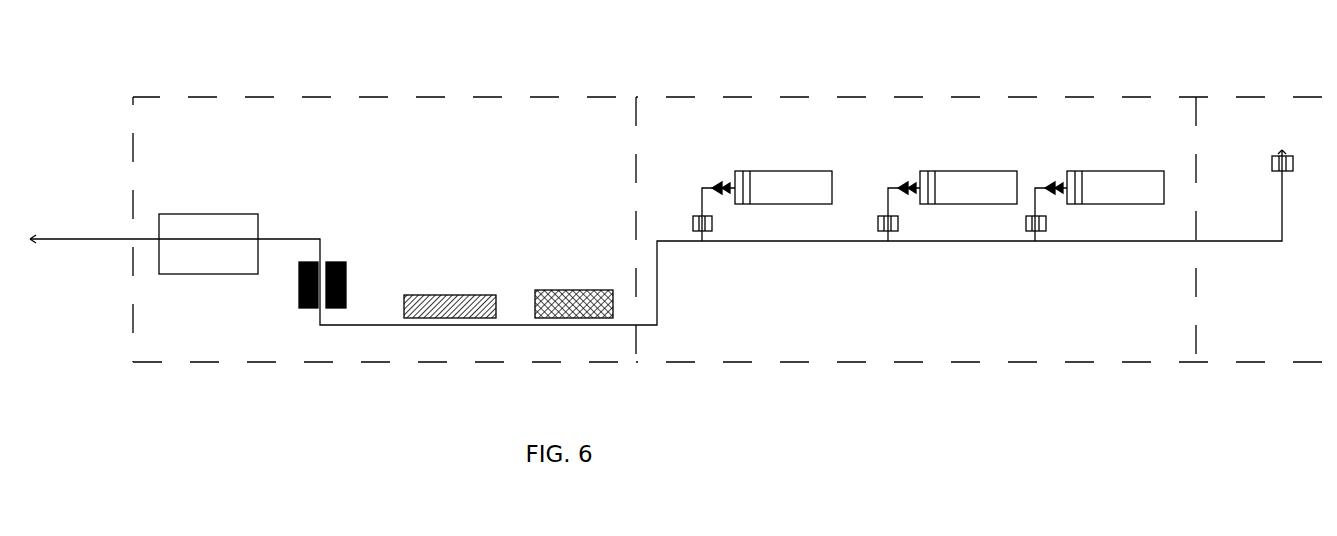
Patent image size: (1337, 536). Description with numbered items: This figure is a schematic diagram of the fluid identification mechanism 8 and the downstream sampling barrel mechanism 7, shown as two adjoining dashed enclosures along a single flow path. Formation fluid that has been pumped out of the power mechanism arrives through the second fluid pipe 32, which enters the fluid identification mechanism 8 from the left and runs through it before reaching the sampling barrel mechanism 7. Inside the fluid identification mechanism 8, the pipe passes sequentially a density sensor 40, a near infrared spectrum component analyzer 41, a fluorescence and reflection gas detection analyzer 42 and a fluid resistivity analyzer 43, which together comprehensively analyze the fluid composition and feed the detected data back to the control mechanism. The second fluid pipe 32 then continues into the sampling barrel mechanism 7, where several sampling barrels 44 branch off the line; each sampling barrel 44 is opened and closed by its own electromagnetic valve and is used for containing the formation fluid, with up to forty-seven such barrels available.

The sampling barrel mechanism 7 is at (900, 92).
The fluid identification mechanism 8 is at (476, 93).
The second fluid pipe 32 is at (77, 239).
The density sensor 40 is at (218, 221).
The near infrared spectrum component analyzer 41 is at (348, 275).
The fluorescence and reflection gas detection analyzer 42 is at (455, 298).
The fluid resistivity analyzer 43 is at (570, 290).
The sampling barrel 44 is at (803, 182).